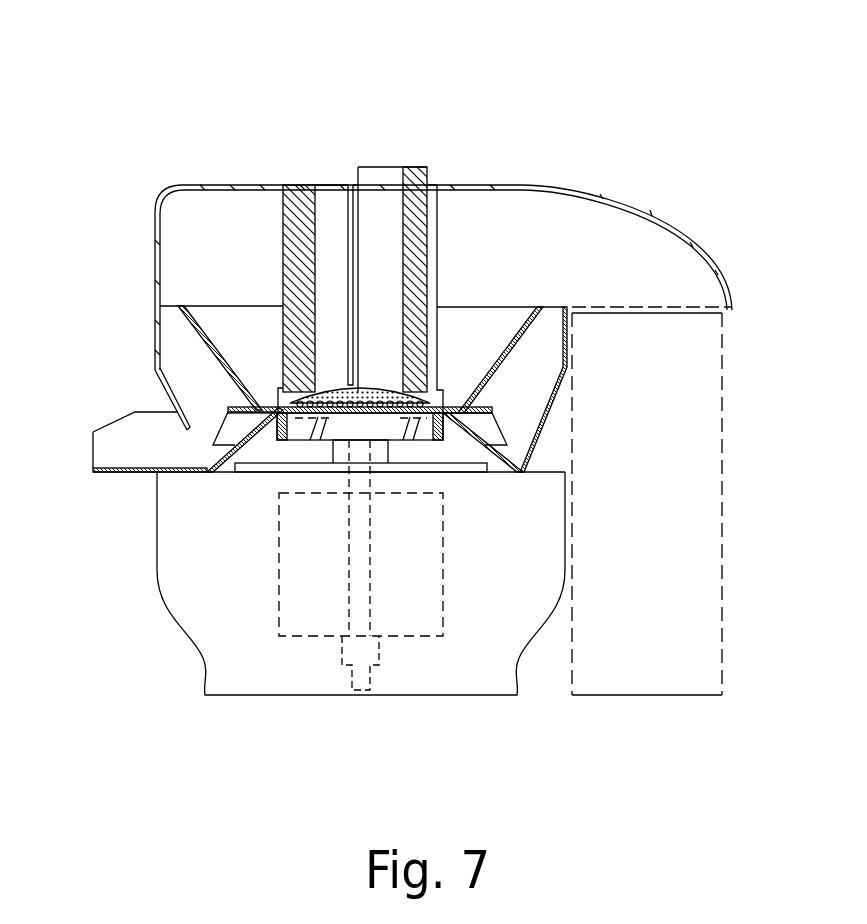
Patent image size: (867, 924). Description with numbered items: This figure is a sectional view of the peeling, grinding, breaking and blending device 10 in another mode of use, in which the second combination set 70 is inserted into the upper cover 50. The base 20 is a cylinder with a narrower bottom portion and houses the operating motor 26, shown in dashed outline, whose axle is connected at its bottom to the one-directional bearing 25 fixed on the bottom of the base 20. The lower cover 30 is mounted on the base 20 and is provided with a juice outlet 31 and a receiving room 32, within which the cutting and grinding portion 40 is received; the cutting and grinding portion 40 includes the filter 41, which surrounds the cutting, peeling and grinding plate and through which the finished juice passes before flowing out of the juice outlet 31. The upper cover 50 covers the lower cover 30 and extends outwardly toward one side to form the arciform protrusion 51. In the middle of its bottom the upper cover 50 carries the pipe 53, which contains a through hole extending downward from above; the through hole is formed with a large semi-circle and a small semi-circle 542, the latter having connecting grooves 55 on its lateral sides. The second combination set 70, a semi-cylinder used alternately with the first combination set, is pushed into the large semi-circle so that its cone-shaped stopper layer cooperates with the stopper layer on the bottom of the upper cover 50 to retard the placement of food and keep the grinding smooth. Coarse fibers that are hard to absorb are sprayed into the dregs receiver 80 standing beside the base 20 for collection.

The peeling, grinding, breaking and blending device 10 is at (578, 72).
The base 20 is at (177, 587).
The one-directional bearing 25 is at (340, 667).
The operating motor 26 is at (393, 620).
The lower cover 30 is at (157, 353).
The juice outlet 31 is at (117, 447).
The receiving room 32 is at (240, 347).
The cutting and grinding portion 40 is at (218, 400).
The filter 41 is at (183, 323).
The upper cover 50 is at (502, 187).
The arciform protrusion 51 is at (648, 208).
The pipe 53 is at (290, 265).
The small semi-circle 542 is at (323, 195).
The connecting groove 55 is at (353, 183).
The second combination set 70 is at (417, 167).
The dregs receiver 80 is at (676, 683).